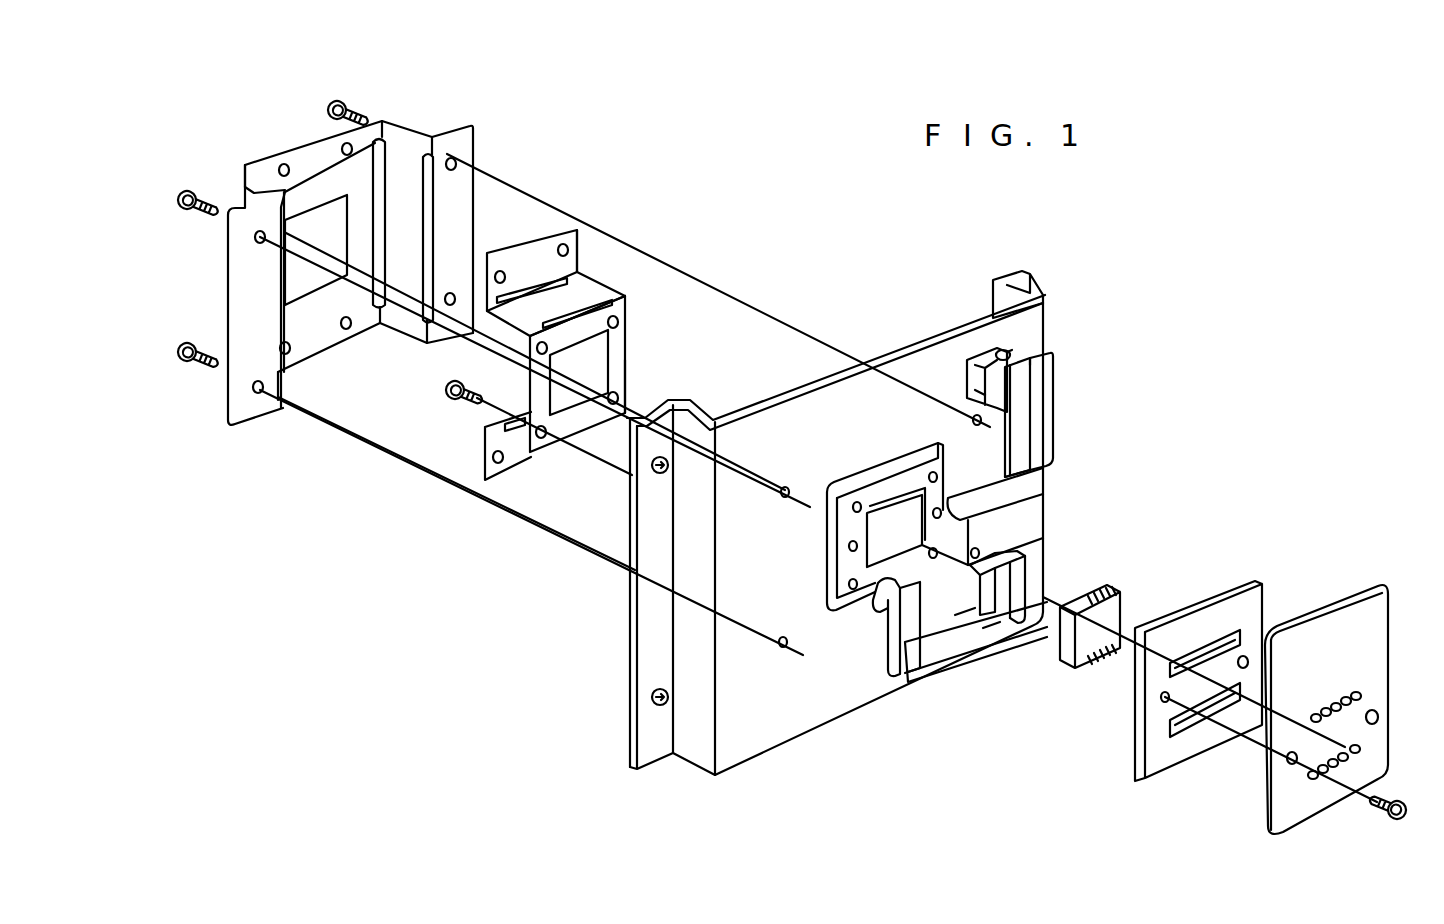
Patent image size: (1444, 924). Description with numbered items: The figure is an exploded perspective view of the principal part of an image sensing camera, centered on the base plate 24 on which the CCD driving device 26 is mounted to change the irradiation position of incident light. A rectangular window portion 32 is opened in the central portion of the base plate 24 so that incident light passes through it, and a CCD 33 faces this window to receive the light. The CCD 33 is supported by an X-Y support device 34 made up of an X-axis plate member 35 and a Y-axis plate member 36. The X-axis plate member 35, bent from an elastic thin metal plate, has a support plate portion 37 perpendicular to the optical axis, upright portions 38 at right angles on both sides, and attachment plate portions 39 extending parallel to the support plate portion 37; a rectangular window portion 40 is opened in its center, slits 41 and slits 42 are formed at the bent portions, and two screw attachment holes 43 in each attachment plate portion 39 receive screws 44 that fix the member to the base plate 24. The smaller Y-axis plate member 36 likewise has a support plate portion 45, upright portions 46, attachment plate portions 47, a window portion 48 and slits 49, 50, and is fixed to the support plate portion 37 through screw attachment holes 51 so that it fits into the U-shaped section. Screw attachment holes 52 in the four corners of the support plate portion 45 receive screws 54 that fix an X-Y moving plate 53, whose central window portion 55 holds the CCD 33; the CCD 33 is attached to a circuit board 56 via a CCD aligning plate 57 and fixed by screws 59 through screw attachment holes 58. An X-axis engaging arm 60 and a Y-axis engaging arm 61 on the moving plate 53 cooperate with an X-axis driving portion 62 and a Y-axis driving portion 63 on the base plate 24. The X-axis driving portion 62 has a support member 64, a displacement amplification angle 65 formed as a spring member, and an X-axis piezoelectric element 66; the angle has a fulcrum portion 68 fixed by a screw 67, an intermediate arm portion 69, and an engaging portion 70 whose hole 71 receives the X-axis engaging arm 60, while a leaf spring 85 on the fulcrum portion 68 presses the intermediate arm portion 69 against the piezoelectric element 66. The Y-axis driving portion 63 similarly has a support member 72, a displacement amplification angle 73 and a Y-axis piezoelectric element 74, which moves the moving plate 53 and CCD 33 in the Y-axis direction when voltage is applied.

The base plate 24 is at (822, 400).
The CCD driving device 26 is at (1092, 318).
The window portion 32 is at (870, 475).
The CCD 33 is at (1115, 605).
The X-Y support device 34 is at (640, 112).
The X-axis plate member 35 is at (408, 117).
The Y-axis plate member 36 is at (650, 283).
The support plate portion 37 is at (328, 335).
The upright portions 38 is at (258, 160).
The attachment plate portions 39 is at (463, 226).
The window portion 40 is at (285, 282).
The slits 41 is at (255, 185).
The slits 42 is at (437, 195).
The screw attachment holes 43 is at (457, 160).
The screws 44 is at (340, 100).
The support plate portion 45 is at (630, 378).
The upright portions 46 is at (615, 262).
The attachment plate portions 47 is at (555, 260).
The window portion 48 is at (568, 392).
The slits 49 is at (622, 300).
The slits 50 is at (575, 275).
The screw attachment holes 51 is at (565, 248).
The screw attachment holes 52 is at (620, 322).
The X-Y moving plate 53 is at (985, 535).
The screws 54 is at (448, 398).
The window portion 55 is at (902, 510).
The circuit board 56 is at (1380, 605).
The CCD aligning plate 57 is at (1240, 605).
The screw attachment holes 58 is at (1160, 702).
The screws 59 is at (1388, 822).
The X-axis engaging arm 60 is at (965, 513).
The Y-axis engaging arm 61 is at (908, 680).
The X-axis driving portion 62 is at (1075, 390).
The Y-axis driving portion 63 is at (977, 675).
The support member 64 is at (975, 360).
The displacement amplification angle 65 is at (1048, 422).
The X-axis piezoelectric element 66 is at (1042, 368).
The screw 67 is at (1012, 350).
The fulcrum portion 68 is at (1000, 350).
The intermediate arm portion 69 is at (1022, 450).
The engaging portion 70 is at (1055, 463).
The hole 71 is at (990, 425).
The support member 72 is at (1030, 568).
The displacement amplification angle 73 is at (983, 628).
The Y-axis piezoelectric element 74 is at (968, 608).
The leaf spring 85 is at (972, 388).